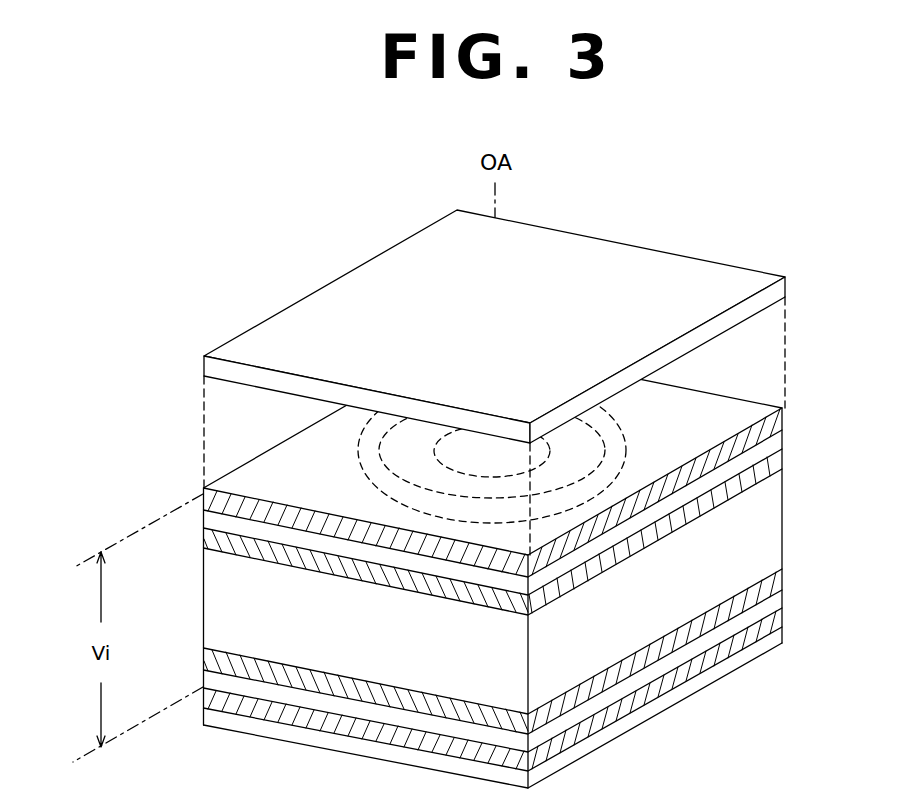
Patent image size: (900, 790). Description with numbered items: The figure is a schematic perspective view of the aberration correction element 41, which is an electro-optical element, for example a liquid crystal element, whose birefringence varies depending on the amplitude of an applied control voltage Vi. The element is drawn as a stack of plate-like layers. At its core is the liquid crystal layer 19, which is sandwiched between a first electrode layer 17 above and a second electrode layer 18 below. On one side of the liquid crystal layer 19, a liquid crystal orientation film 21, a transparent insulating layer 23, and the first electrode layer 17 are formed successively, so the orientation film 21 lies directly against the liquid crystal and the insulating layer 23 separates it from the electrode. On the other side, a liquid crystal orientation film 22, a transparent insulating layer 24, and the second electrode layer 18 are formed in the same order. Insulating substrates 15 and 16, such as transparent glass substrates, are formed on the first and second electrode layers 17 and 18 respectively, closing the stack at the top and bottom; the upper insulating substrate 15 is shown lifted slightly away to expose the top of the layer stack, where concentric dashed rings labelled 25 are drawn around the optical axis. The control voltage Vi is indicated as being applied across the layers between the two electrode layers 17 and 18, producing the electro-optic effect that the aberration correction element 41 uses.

The aberration correction element 41 is at (178, 254).
The insulating substrate 15 is at (785, 293).
The first electrode layer 17 is at (783, 418).
The transparent insulating layer 23 is at (783, 440).
The liquid crystal orientation film 21 is at (783, 462).
The liquid crystal layer 19 is at (770, 528).
The liquid crystal orientation film 22 is at (783, 576).
The transparent insulating layer 24 is at (783, 598).
The second electrode layer 18 is at (783, 616).
The insulating substrate 16 is at (783, 637).
The annular electrode pattern 25 is at (620, 437).